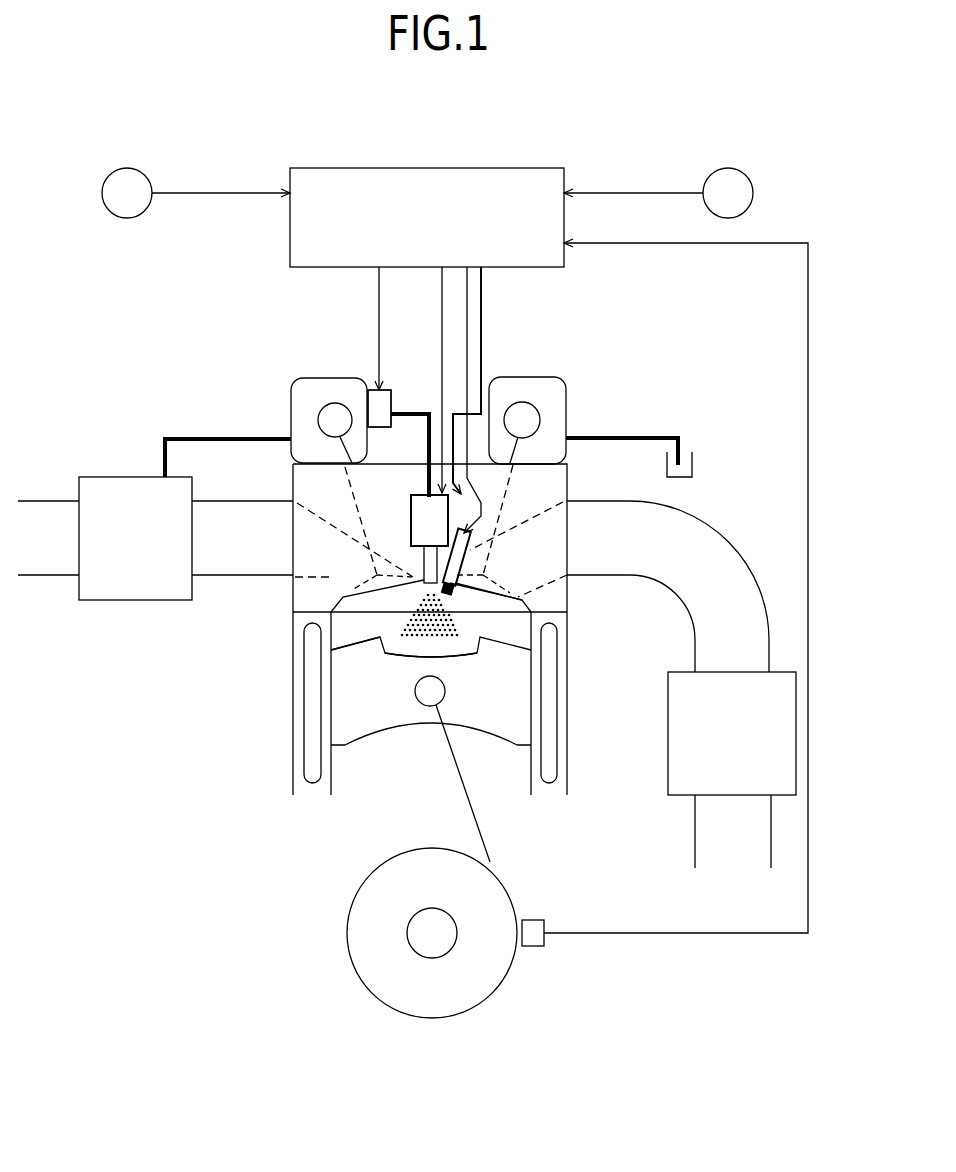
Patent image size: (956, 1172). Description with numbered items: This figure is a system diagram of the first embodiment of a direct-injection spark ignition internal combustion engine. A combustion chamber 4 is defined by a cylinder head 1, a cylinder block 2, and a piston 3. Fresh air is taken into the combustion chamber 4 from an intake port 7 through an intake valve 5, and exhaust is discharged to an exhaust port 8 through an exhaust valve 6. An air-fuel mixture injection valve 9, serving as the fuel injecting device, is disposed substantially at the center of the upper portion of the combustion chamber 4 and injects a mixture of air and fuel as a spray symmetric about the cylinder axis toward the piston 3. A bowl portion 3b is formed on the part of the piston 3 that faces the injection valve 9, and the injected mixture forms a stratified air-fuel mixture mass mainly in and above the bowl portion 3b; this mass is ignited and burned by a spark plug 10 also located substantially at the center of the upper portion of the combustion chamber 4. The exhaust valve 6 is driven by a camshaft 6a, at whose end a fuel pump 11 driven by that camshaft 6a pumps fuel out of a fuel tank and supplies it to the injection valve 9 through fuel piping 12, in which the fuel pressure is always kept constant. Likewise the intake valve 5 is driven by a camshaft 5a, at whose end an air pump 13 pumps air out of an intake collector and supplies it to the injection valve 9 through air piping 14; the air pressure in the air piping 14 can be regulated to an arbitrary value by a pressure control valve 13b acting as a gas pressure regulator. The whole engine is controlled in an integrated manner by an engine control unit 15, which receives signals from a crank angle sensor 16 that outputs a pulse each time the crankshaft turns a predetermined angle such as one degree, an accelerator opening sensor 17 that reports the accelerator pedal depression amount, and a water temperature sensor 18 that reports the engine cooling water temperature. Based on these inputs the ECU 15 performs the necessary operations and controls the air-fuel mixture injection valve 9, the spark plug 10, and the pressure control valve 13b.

The cylinder head 1 is at (555, 603).
The cylinder block 2 is at (560, 652).
The piston 3 is at (513, 700).
The bowl portion 3b is at (380, 640).
The combustion chamber 4 is at (363, 622).
The intake valve 5 is at (300, 488).
The camshaft 5a is at (318, 425).
The exhaust valve 6 is at (468, 548).
The camshaft 6a is at (542, 413).
The intake port 7 is at (328, 580).
The exhaust port 8 is at (545, 563).
The air-fuel mixture injection valve 9 is at (427, 518).
The spark plug 10 is at (567, 500).
The fuel pump 11 is at (535, 378).
The fuel piping 12 is at (482, 410).
The air pump 13 is at (302, 378).
The pressure control valve 13b is at (370, 391).
The air piping 14 is at (415, 413).
The engine control unit 15 is at (415, 168).
The crank angle sensor 16 is at (546, 920).
The accelerator opening sensor 17 is at (710, 177).
The water temperature sensor 18 is at (145, 180).